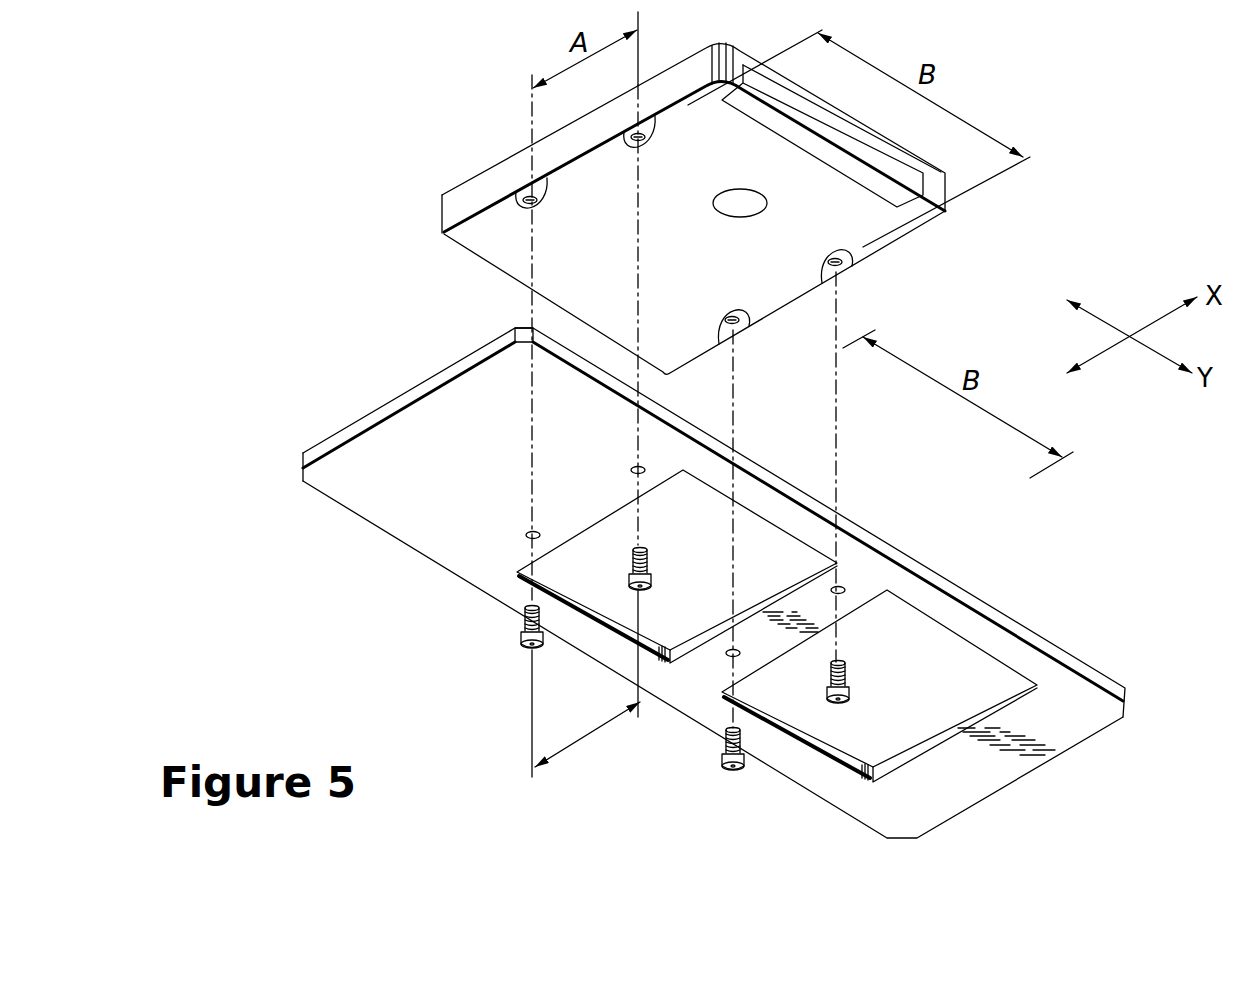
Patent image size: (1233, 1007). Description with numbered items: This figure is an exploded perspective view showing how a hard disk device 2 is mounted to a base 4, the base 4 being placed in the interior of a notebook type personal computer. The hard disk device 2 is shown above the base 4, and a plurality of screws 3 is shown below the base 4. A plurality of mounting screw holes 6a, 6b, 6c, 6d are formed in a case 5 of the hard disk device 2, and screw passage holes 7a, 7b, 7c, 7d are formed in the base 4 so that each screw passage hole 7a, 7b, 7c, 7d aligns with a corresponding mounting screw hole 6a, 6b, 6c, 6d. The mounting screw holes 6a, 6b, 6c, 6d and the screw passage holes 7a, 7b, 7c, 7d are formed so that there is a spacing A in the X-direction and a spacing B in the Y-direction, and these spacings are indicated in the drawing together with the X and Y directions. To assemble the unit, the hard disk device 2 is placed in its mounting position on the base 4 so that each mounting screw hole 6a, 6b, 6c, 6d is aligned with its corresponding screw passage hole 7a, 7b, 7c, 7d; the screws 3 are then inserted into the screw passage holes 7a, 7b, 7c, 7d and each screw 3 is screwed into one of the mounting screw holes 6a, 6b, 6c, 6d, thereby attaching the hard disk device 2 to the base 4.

The hard disk device 2 is at (412, 186).
The screws 3 is at (522, 630).
The base 4 is at (341, 407).
The case 5 is at (698, 78).
The mounting screw hole 6a is at (638, 142).
The mounting screw hole 6b is at (530, 202).
The mounting screw hole 6c is at (833, 263).
The mounting screw hole 6d is at (728, 322).
The screw passage hole 7a is at (637, 472).
The screw passage hole 7b is at (530, 537).
The screw passage hole 7c is at (846, 592).
The screw passage hole 7d is at (731, 656).